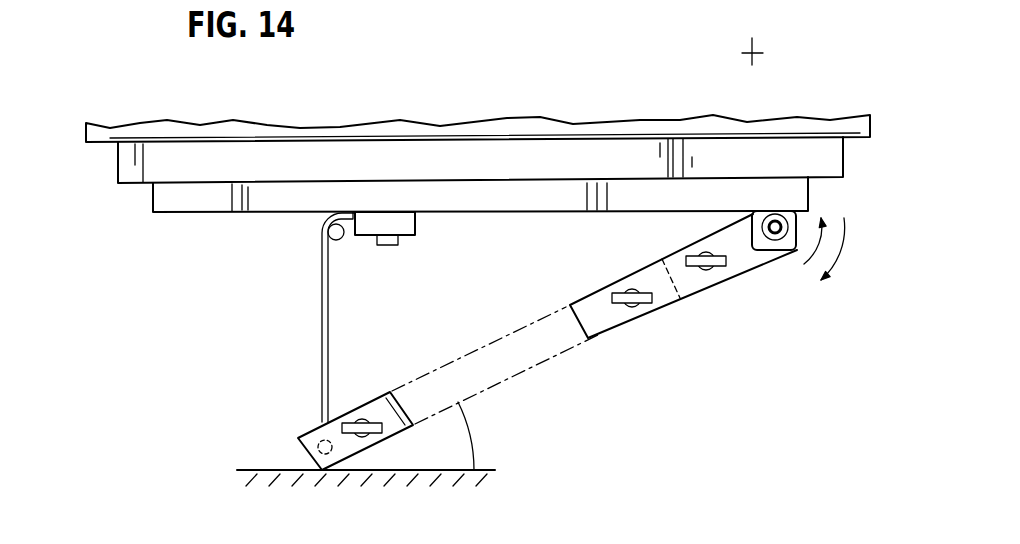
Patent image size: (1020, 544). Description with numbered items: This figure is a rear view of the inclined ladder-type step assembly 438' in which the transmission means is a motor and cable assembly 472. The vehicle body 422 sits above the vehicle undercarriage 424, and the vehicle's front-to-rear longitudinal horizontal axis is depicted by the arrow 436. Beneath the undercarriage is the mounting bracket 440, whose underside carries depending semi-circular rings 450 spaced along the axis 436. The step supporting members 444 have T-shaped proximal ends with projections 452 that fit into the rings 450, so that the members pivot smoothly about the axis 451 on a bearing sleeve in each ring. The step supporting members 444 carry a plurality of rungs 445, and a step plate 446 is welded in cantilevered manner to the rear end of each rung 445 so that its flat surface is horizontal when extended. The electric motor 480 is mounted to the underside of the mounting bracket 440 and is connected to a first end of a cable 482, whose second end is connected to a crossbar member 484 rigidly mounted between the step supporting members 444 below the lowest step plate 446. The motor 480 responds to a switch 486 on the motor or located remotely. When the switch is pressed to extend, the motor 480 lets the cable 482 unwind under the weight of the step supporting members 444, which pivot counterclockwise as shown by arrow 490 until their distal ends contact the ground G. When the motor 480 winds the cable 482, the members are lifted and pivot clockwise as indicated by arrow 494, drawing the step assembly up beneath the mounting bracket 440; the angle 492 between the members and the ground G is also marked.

The vehicle body 422 is at (612, 122).
The vehicle undercarriage 424 is at (127, 163).
The mounting bracket 440 is at (153, 207).
The longitudinal horizontal axis 436 is at (758, 50).
The step assembly 438' is at (383, 358).
The cable 482 is at (321, 385).
The electric motor 480 is at (415, 223).
The switch 486 is at (393, 245).
The motor and cable assembly 472 is at (366, 257).
The crossbar member 484 is at (322, 472).
The step supporting members 444 is at (673, 298).
The rungs 445 is at (708, 270).
The step plate 446 is at (678, 264).
The semi-circular rings 450 is at (802, 220).
The pivot axis 451 is at (774, 222).
The projections 452 is at (782, 250).
The counterclockwise pivot arrow 490 is at (842, 236).
The clockwise pivot arrow 494 is at (828, 272).
The leg angle 492 is at (477, 443).
The ground G is at (258, 470).